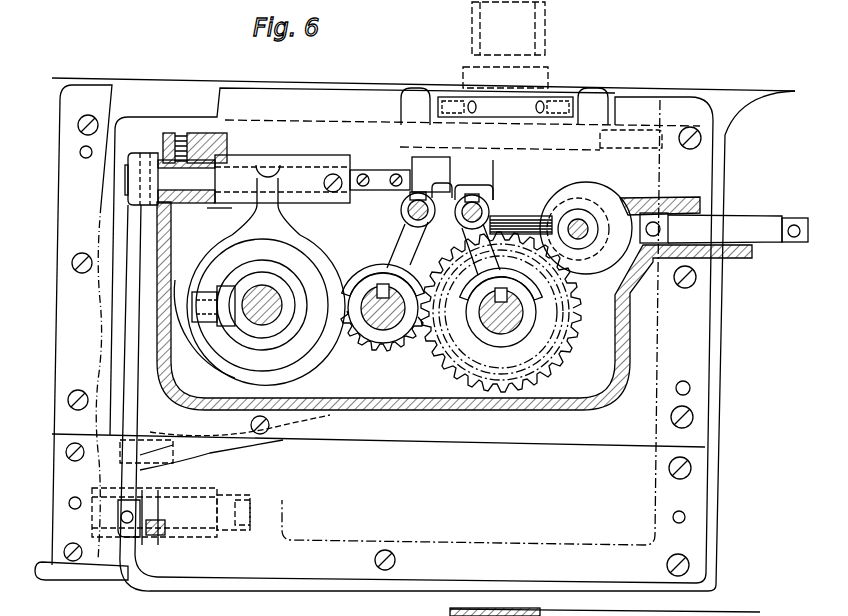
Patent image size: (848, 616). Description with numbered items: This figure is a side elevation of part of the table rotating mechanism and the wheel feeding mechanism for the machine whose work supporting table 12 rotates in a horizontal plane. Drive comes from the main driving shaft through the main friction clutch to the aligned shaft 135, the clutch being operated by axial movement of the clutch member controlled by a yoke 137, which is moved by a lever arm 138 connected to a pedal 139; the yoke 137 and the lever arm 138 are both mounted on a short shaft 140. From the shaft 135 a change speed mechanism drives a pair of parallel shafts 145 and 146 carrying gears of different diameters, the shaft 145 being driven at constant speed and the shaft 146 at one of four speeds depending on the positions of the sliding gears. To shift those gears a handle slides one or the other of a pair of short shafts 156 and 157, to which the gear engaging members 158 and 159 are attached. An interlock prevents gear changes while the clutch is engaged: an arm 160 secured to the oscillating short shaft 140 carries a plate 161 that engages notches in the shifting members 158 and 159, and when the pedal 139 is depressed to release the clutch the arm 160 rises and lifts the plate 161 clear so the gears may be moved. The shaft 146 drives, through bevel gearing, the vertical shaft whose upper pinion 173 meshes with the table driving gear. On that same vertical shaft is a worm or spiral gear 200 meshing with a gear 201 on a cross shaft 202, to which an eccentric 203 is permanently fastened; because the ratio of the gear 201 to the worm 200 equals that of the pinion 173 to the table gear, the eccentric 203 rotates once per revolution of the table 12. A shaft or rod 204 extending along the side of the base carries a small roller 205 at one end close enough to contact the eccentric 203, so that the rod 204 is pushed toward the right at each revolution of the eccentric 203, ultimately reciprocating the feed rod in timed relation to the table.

The work supporting table 12 is at (728, 612).
The shaft 135 is at (262, 322).
The yoke 137 is at (300, 252).
The lever arm 138 is at (130, 310).
The pedal 139 is at (68, 573).
The short shaft 140 is at (172, 180).
The shaft 145 is at (373, 330).
The shaft 146 is at (516, 328).
The short shaft 156 is at (408, 222).
The short shaft 157 is at (462, 234).
The gear engaging member 158 is at (398, 262).
The gear engaging member 159 is at (458, 312).
The arm 160 is at (400, 167).
The plate 161 is at (437, 180).
The pinion 173 is at (548, 45).
The worm or spiral gear 200 is at (508, 215).
The gear 201 is at (578, 208).
The cross shaft 202 is at (583, 249).
The eccentric 203 is at (652, 200).
The shaft or rod 204 is at (786, 216).
The roller 205 is at (645, 265).